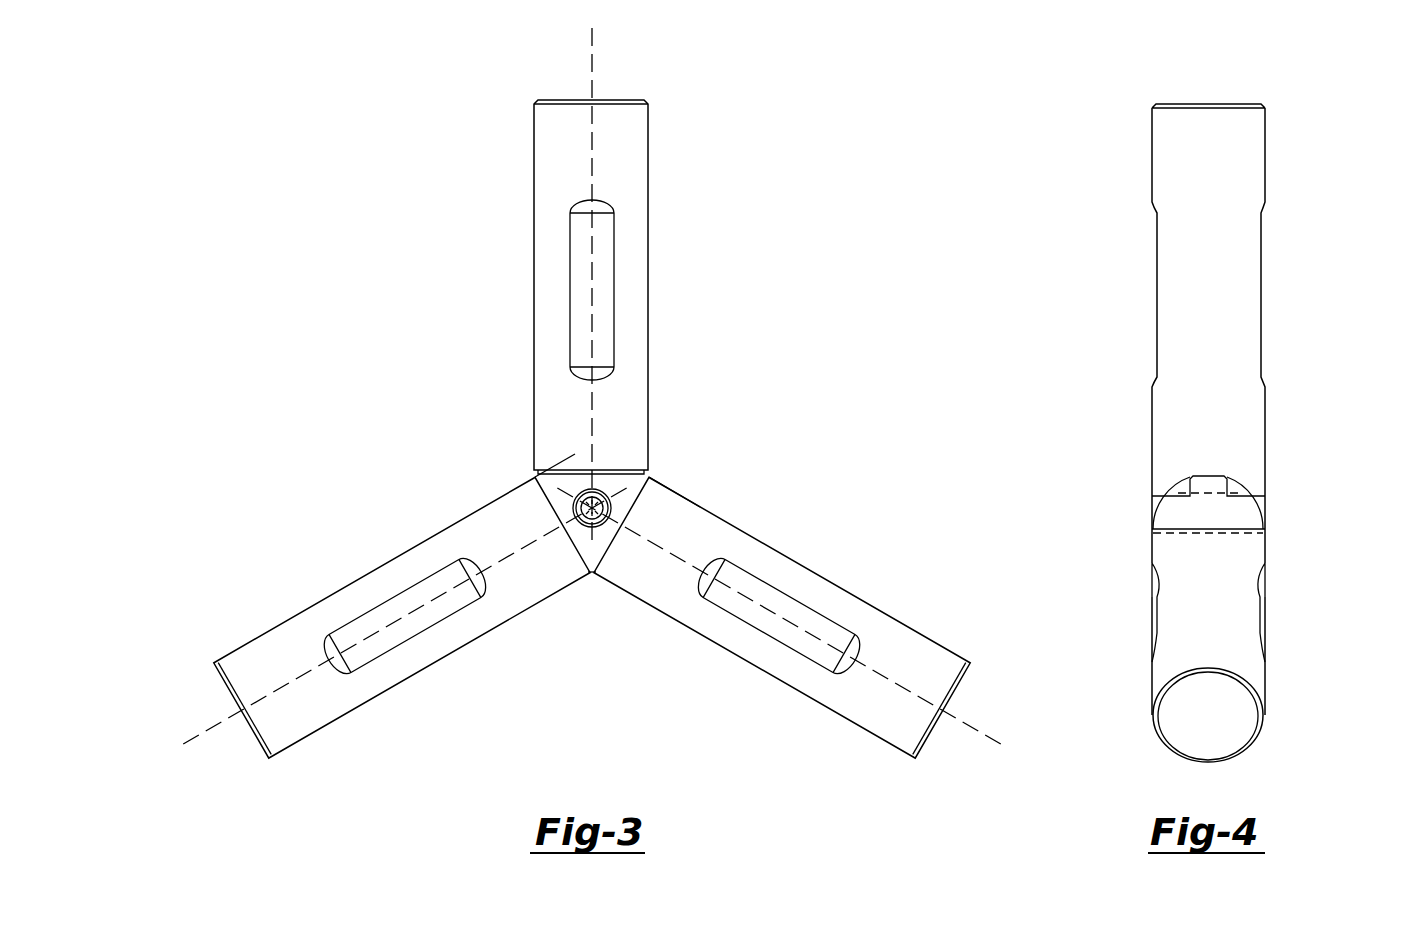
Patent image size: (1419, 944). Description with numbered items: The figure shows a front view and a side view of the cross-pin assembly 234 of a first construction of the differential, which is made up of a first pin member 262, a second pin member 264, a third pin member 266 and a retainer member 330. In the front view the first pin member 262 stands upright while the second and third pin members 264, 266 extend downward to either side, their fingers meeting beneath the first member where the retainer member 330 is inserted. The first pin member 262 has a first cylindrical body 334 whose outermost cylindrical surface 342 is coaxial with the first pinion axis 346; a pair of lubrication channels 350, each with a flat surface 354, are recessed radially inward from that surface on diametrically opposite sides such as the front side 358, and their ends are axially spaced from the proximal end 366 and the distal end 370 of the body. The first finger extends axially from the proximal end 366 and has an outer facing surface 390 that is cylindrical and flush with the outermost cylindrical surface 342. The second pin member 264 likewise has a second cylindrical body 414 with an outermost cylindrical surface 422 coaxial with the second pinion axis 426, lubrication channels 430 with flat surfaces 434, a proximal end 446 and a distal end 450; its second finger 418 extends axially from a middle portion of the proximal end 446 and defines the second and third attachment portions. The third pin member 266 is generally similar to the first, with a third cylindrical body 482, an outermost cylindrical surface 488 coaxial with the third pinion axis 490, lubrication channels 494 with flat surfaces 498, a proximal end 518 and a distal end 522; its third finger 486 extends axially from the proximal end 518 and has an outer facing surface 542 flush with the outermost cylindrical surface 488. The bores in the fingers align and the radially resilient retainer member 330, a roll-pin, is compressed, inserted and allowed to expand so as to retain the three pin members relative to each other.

In FIG. 3, the cross-pin assembly 234 is at (360, 186).
In FIG. 4, the cross-pin assembly 234 is at (1070, 88).
In FIG. 3, the first pin member 262 is at (535, 118).
In FIG. 4, the first pin member 262 is at (1262, 145).
In FIG. 3, the second pin member 264 is at (245, 640).
In FIG. 4, the second pin member 264 is at (1238, 720).
In FIG. 3, the third pin member 266 is at (888, 747).
In FIG. 3, the retainer member 330 is at (610, 512).
In FIG. 3, the first cylindrical body 334 is at (650, 155).
In FIG. 4, the first cylindrical body 334 is at (1262, 260).
In FIG. 3, the outermost cylindrical surface 342 is at (548, 184).
In FIG. 4, the outermost cylindrical surface 342 is at (1158, 166).
In FIG. 3, the first pinion axis 346 is at (592, 50).
In FIG. 3, the lubrication channels 350 is at (614, 250).
In FIG. 4, the lubrication channels 350 is at (1155, 350).
In FIG. 3, the flat surface 354 is at (608, 312).
In FIG. 4, the flat surface 354 is at (1155, 258).
In FIG. 4, the front side 358 is at (1264, 188).
In FIG. 3, the proximal end 366 is at (610, 470).
In FIG. 4, the proximal end 366 is at (1201, 475).
In FIG. 3, the distal end 370 is at (640, 102).
In FIG. 4, the distal end 370 is at (1258, 98).
In FIG. 4, the outer facing surface 390 is at (1155, 497).
In FIG. 3, the second cylindrical body 414 is at (290, 730).
In FIG. 4, the second cylindrical body 414 is at (1262, 675).
In FIG. 4, the second finger 418 is at (1215, 480).
In FIG. 3, the outermost cylindrical surface 422 is at (350, 694).
In FIG. 4, the outermost cylindrical surface 422 is at (1157, 655).
In FIG. 3, the second pinion axis 426 is at (202, 735).
In FIG. 3, the lubrication channels 430 is at (360, 615).
In FIG. 4, the lubrication channels 430 is at (1262, 610).
In FIG. 3, the flat surface 434 is at (440, 584).
In FIG. 3, the proximal end 446 is at (570, 555).
In FIG. 3, the distal end 450 is at (218, 690).
In FIG. 4, the distal end 450 is at (1220, 755).
In FIG. 3, the third cylindrical body 482 is at (866, 720).
In FIG. 3, the third finger 486 is at (553, 500).
In FIG. 3, the outermost cylindrical surface 488 is at (893, 665).
In FIG. 3, the third pinion axis 490 is at (983, 737).
In FIG. 3, the lubrication channels 494 is at (800, 655).
In FIG. 3, the flat surface 498 is at (734, 596).
In FIG. 3, the proximal end 518 is at (650, 478).
In FIG. 3, the distal end 522 is at (965, 688).
In FIG. 4, the outer facing surface 542 is at (1262, 497).